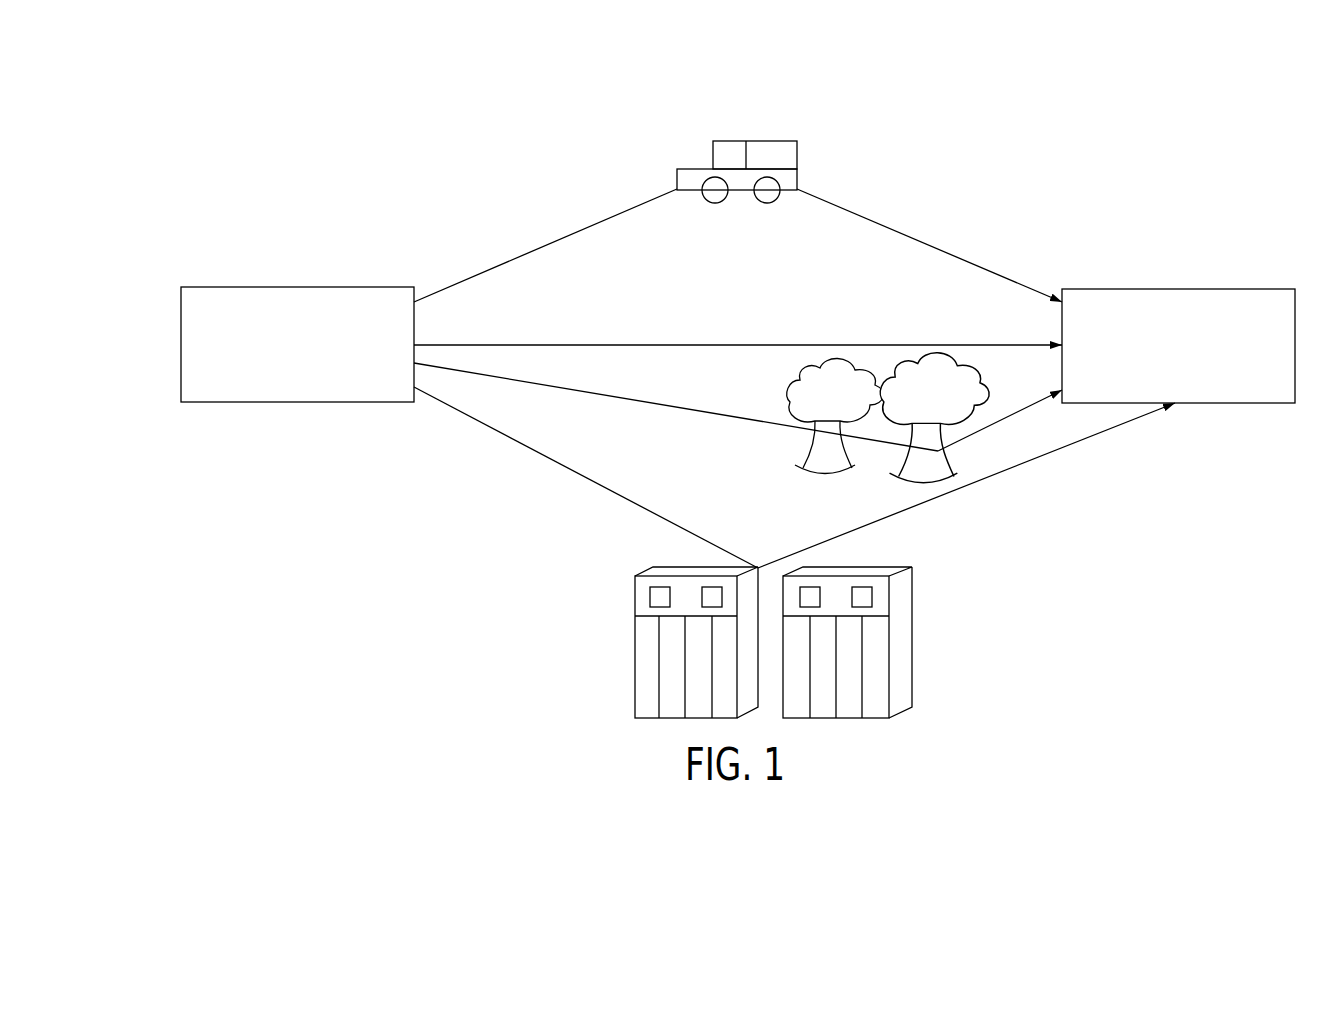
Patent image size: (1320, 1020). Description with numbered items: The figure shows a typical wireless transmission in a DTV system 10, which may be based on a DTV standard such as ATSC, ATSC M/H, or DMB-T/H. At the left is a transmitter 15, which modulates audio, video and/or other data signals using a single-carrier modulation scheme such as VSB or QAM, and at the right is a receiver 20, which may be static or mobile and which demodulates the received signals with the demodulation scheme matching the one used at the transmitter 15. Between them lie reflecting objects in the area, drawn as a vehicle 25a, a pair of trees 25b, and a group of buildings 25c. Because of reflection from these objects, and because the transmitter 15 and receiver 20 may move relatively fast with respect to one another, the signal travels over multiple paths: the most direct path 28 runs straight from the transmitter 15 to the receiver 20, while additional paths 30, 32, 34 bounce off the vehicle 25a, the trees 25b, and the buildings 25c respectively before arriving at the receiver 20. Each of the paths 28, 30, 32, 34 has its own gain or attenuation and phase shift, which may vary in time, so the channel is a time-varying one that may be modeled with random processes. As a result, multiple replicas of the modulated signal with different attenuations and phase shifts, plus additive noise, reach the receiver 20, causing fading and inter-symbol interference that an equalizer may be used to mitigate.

The DTV system 10 is at (182, 137).
The transmitter 15 is at (268, 287).
The receiver 20 is at (1156, 289).
The object 25a is at (768, 141).
The object 25b is at (788, 383).
The object 25c is at (912, 631).
The most direct path 28 is at (627, 344).
The additional path 30 is at (521, 256).
The additional path 32 is at (554, 388).
The additional path 34 is at (695, 533).